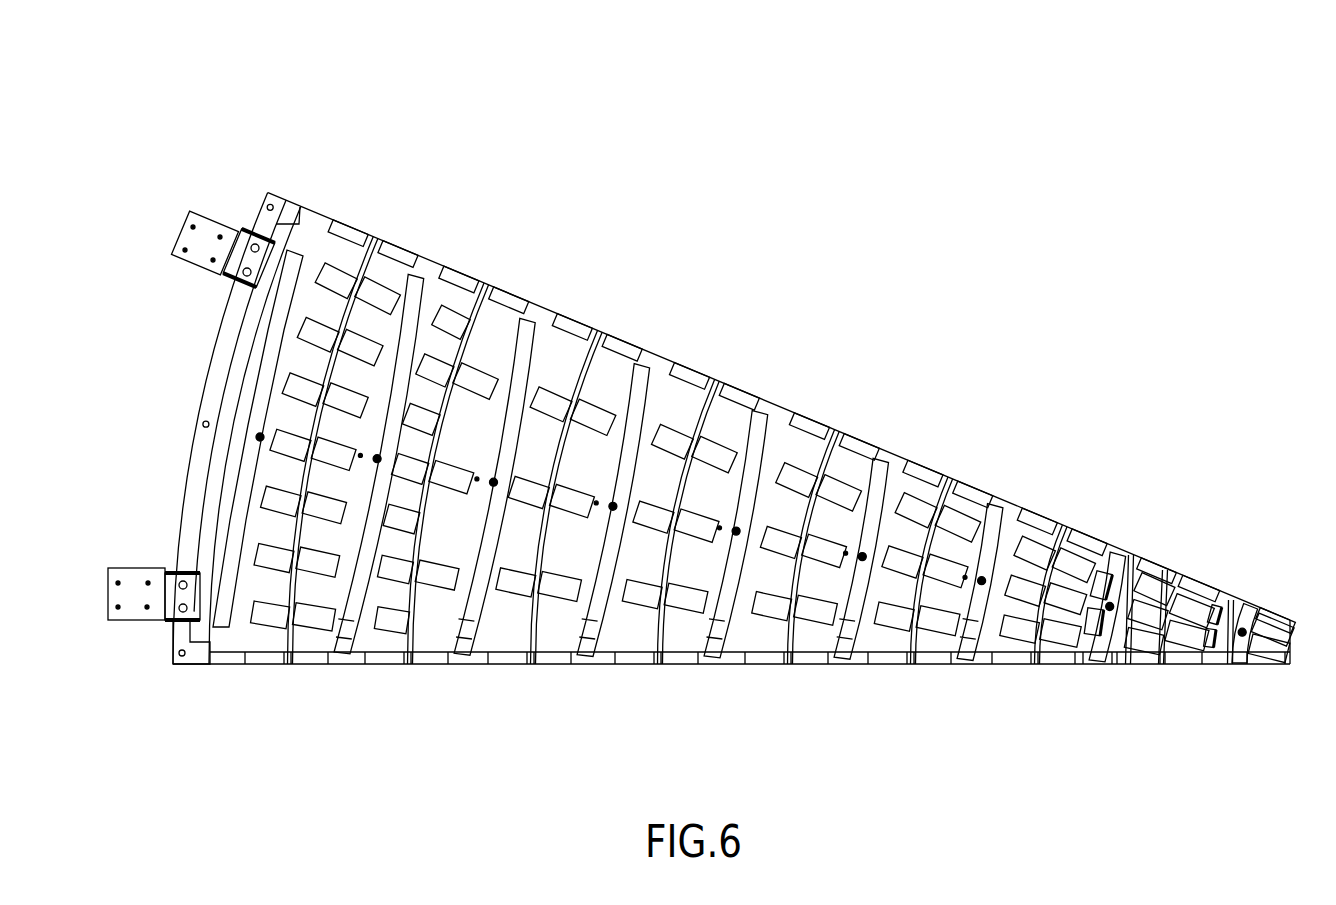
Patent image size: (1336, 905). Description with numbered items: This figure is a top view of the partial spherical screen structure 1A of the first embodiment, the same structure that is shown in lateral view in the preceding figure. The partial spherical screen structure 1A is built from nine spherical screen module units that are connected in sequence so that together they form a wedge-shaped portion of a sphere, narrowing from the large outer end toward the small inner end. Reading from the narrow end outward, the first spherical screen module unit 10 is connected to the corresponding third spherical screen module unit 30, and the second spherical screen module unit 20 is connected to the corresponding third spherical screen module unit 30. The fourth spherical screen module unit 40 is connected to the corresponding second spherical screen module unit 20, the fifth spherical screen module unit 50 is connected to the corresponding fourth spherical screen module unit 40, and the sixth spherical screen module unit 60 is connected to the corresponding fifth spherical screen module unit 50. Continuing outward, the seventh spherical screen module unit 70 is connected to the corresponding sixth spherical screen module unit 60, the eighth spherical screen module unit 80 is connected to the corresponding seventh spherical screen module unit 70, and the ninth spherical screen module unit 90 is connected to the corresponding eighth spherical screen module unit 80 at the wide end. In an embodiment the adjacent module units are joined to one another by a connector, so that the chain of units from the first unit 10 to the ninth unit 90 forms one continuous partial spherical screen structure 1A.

The partial spherical screen structure 1A is at (199, 138).
The ninth spherical screen module unit 90 is at (327, 186).
The eighth spherical screen module unit 80 is at (443, 186).
The seventh spherical screen module unit 70 is at (559, 186).
The sixth spherical screen module unit 60 is at (691, 238).
The fifth spherical screen module unit 50 is at (802, 292).
The fourth spherical screen module unit 40 is at (920, 343).
The second spherical screen module unit 20 is at (1029, 401).
The third spherical screen module unit 30 is at (1143, 456).
The first spherical screen module unit 10 is at (1246, 506).